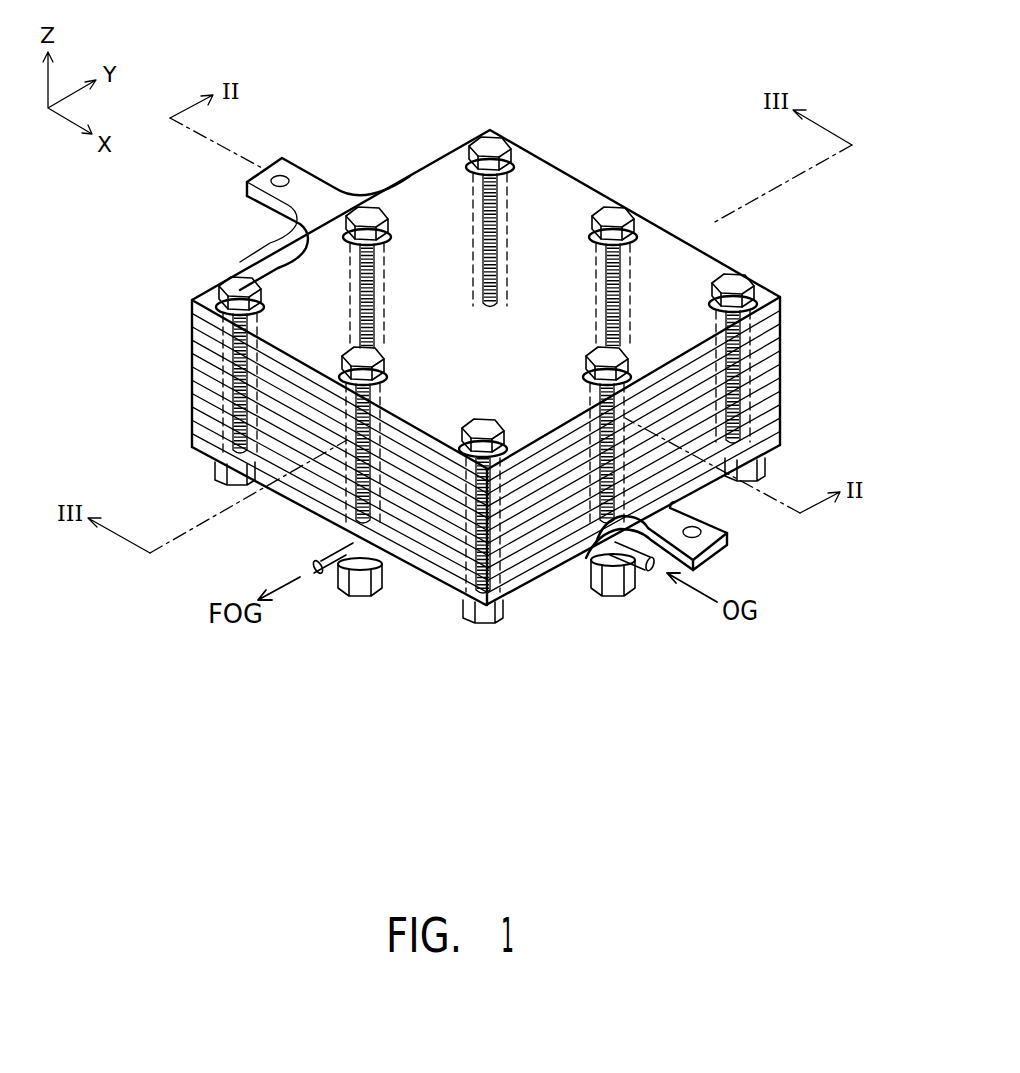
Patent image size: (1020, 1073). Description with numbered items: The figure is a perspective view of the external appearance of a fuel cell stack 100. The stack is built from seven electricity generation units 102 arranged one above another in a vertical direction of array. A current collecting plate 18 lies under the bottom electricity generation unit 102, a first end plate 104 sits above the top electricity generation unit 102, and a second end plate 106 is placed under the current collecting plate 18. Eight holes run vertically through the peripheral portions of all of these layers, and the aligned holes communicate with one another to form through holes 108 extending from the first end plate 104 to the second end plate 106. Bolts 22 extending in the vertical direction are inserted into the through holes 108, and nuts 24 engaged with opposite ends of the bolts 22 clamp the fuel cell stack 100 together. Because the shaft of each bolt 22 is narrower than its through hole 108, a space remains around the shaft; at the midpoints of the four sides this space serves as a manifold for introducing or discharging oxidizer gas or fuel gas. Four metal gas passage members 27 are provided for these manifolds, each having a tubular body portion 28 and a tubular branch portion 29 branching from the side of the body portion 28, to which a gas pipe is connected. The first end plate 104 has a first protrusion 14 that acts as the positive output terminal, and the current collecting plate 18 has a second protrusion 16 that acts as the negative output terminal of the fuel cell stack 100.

The fuel cell stack 100 is at (497, 381).
The first protrusion 14 is at (303, 183).
The second protrusion 16 is at (730, 545).
The current collecting plate 18 is at (782, 421).
The bolt 22 is at (510, 185).
The nut 24 is at (363, 214).
The gas passage member 27 is at (443, 619).
The body portion 28 is at (357, 545).
The branch portion 29 is at (328, 560).
The electricity generation unit 102 is at (782, 410).
The first end plate 104 is at (782, 303).
The second end plate 106 is at (782, 437).
The through hole 108 is at (505, 162).